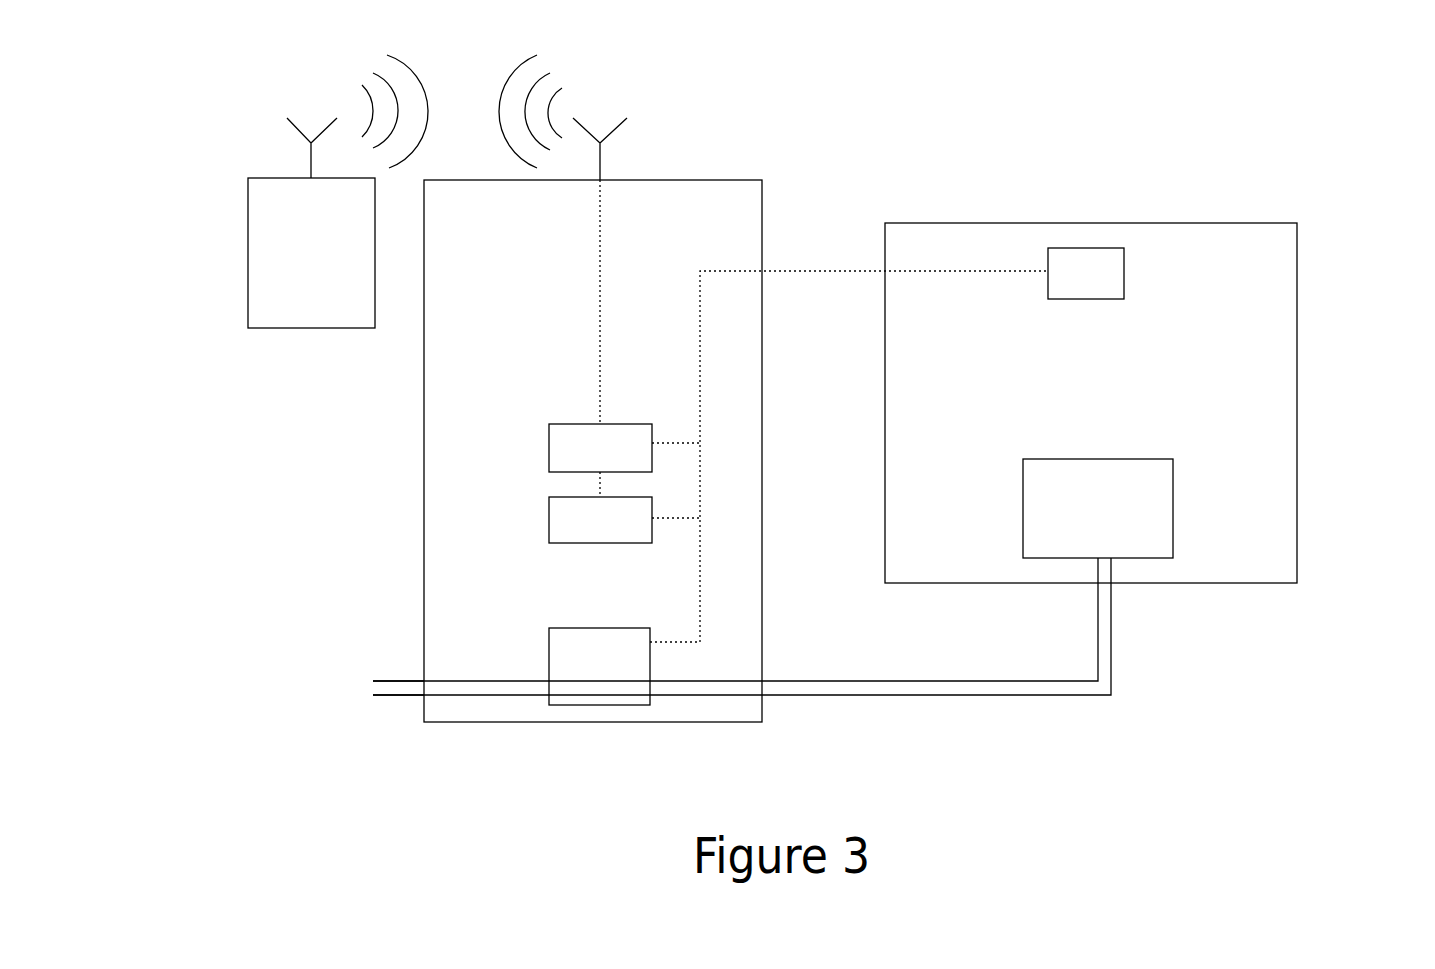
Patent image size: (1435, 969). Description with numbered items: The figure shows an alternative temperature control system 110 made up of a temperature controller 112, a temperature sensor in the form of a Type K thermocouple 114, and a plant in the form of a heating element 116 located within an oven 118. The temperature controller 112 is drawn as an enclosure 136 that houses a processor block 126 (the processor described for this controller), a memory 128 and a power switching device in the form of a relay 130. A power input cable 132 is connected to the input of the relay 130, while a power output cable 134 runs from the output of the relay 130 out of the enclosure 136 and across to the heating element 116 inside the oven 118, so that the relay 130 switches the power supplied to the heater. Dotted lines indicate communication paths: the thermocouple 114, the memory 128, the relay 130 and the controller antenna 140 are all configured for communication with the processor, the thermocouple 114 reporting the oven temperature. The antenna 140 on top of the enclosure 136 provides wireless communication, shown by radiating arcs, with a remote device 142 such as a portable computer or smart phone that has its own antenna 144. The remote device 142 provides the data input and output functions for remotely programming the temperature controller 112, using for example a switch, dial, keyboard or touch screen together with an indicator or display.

The temperature control system 110 is at (835, 125).
The temperature controller 112 is at (212, 572).
The thermocouple 114 is at (1090, 263).
The heating element 116 is at (1145, 525).
The oven 118 is at (1297, 334).
The transceiver 126 is at (549, 443).
The memory 128 is at (549, 521).
The relay 130 is at (603, 688).
The power input cable 132 is at (355, 683).
The power output cable 134 is at (960, 705).
The enclosure 136 is at (450, 722).
The antenna 140 is at (627, 136).
The remote device 142 is at (248, 242).
The antenna 144 is at (285, 132).